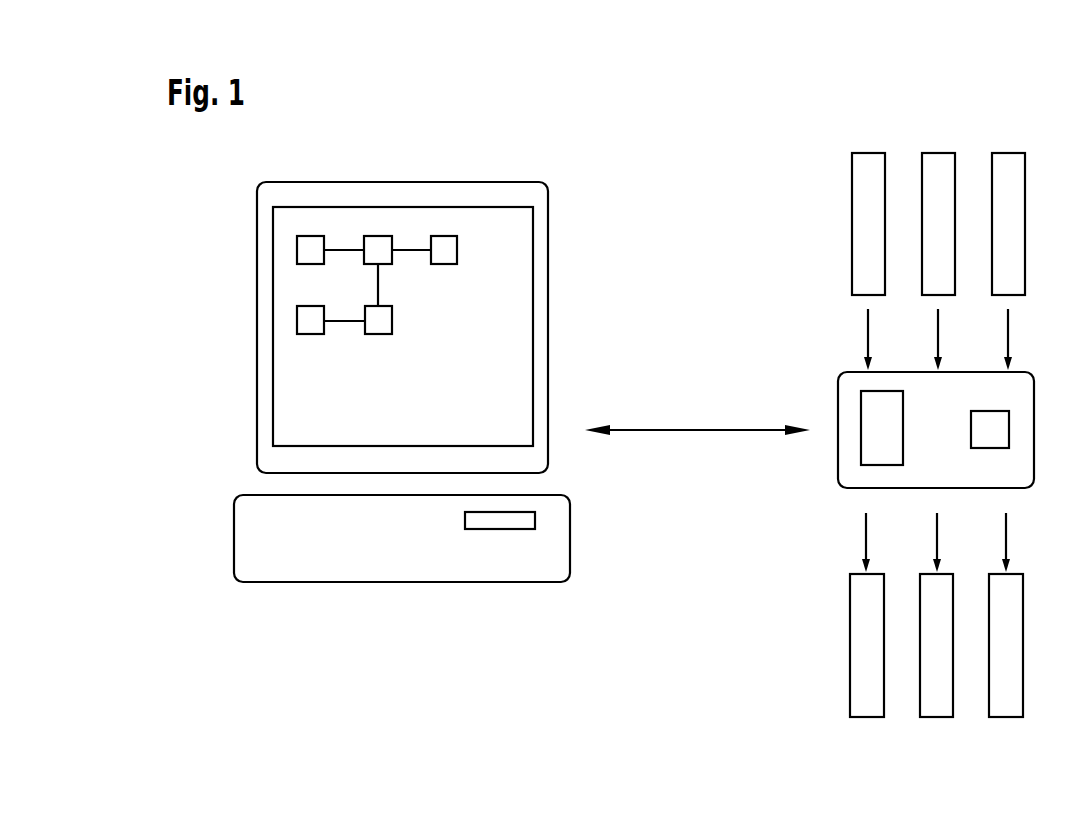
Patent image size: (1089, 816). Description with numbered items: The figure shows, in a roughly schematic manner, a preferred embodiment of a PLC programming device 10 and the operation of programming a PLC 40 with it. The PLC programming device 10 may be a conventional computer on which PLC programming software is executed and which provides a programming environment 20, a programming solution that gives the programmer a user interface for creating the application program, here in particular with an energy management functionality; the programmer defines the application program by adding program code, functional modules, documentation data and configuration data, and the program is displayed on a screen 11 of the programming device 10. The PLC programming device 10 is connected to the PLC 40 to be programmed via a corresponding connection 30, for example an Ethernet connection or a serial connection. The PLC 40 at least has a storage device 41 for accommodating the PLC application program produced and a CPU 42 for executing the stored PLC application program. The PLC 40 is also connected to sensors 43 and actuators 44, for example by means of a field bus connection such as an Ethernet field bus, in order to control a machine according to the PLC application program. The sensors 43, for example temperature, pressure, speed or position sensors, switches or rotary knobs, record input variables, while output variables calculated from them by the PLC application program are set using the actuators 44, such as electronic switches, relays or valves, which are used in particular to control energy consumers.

The PLC programming device 10 is at (222, 222).
The screen 11 is at (280, 454).
The programming environment 20 is at (268, 367).
The connection 30 is at (693, 430).
The PLC 40 is at (1022, 390).
The storage device 41 is at (866, 450).
The CPU 42 is at (997, 431).
The sensors 43 is at (827, 205).
The actuators 44 is at (825, 663).